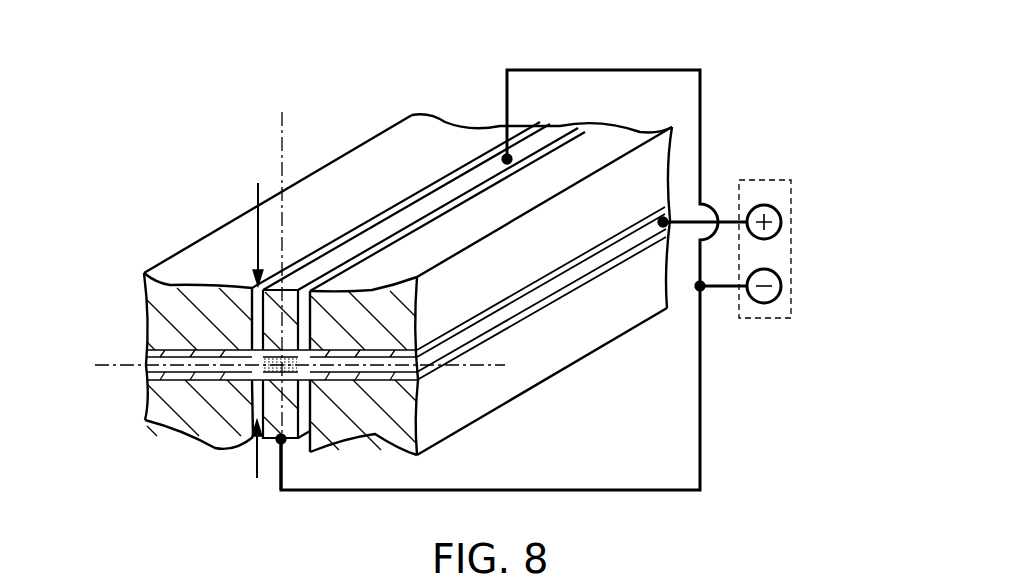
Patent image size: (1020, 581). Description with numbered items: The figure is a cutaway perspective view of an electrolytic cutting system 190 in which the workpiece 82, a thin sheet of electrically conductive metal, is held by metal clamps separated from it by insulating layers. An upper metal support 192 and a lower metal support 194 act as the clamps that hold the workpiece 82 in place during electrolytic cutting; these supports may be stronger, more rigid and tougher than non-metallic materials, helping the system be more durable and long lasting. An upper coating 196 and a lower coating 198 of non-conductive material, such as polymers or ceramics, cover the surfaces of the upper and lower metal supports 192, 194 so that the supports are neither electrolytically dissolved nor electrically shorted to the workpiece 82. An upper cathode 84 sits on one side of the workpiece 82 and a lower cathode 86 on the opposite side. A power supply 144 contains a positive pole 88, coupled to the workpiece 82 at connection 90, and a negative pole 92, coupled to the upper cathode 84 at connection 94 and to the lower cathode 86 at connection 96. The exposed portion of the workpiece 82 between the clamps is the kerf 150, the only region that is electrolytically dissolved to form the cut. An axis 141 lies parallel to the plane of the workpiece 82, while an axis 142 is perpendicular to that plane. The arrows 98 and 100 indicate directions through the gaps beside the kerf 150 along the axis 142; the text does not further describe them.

The workpiece 82 is at (557, 283).
The upper cathode 84 is at (540, 135).
The lower cathode 86 is at (276, 445).
The positive pole 88 is at (775, 204).
The connection 90 is at (667, 218).
The negative pole 92 is at (771, 303).
The connection 94 is at (513, 155).
The connection 96 is at (285, 444).
The inlet flow direction 98 is at (258, 183).
The outlet flow direction 100 is at (257, 468).
The axis 141 is at (103, 365).
The axis 142 is at (282, 132).
The power supply 144 is at (738, 187).
The kerf 150 is at (247, 392).
The electrolytic cutting system 190 is at (637, 52).
The upper metal support 192 is at (153, 293).
The lower metal support 194 is at (140, 430).
The upper coating 196 is at (140, 358).
The lower coating 198 is at (147, 372).